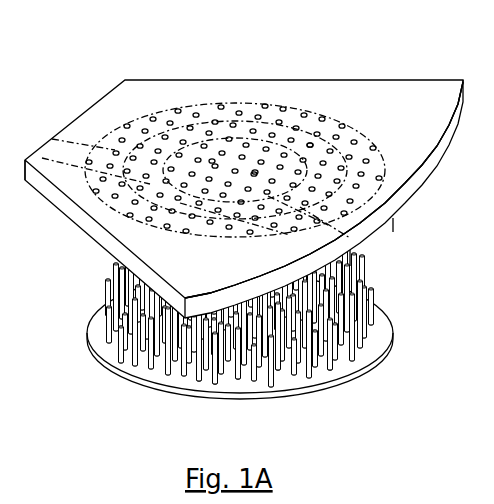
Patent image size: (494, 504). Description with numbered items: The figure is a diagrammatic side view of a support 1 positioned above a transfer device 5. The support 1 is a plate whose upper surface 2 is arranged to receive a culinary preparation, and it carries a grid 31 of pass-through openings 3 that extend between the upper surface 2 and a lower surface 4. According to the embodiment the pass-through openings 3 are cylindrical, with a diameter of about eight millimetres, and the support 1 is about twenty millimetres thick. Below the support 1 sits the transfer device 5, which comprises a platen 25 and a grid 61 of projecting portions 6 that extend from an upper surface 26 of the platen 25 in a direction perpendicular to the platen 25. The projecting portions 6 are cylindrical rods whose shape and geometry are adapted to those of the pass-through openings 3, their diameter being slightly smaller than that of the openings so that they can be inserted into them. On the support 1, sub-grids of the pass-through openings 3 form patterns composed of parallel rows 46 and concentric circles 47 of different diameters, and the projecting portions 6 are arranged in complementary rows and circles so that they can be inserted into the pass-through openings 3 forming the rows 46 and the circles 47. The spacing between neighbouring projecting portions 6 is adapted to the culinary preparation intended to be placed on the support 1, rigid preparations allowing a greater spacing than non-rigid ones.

The support 1 is at (493, 273).
The upper surface 2 is at (127, 97).
The pass-through openings 3 is at (255, 168).
The grid of pass-through openings 31 is at (261, 97).
The lower surface 4 is at (378, 225).
The transfer device 5 is at (92, 399).
The projecting portions 6 is at (234, 372).
The grid of projecting portions 61 is at (284, 374).
The platen 25 is at (377, 352).
The upper surface 26 is at (207, 385).
The parallel rows 46 is at (57, 160).
The concentric circles 47 is at (200, 132).